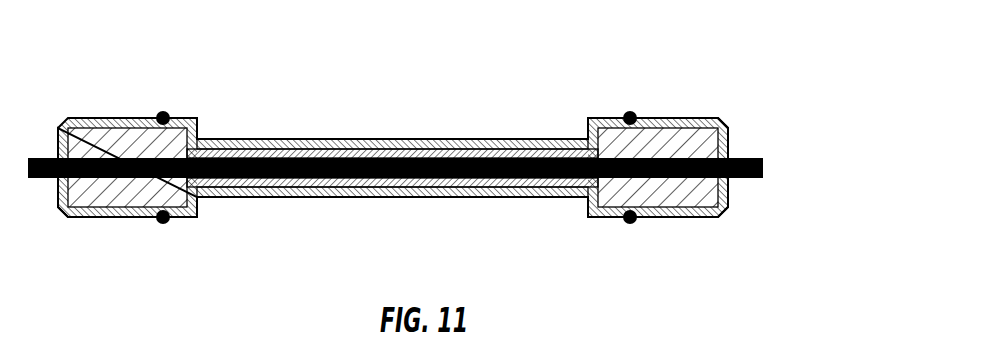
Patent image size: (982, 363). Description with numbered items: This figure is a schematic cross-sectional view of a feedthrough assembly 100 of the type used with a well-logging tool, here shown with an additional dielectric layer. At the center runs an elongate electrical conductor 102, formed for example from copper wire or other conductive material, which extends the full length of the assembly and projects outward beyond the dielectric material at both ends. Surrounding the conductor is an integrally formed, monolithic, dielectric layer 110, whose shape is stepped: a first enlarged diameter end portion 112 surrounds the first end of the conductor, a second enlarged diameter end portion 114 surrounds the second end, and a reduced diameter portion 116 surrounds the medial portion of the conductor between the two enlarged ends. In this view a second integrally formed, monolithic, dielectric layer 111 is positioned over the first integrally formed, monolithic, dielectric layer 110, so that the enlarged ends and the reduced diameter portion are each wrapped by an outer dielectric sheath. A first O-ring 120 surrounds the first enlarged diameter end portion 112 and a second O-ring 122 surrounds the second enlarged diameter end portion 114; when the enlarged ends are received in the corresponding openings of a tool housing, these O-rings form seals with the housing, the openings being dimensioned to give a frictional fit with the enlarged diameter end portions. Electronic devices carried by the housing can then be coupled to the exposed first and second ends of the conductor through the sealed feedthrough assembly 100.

The feedthrough assembly 100 is at (401, 101).
The elongate electrical conductor 102 is at (763, 166).
The integrally formed, monolithic, dielectric layer 110 is at (271, 114).
The second integrally formed, monolithic, dielectric layer 111 is at (72, 214).
The first enlarged diameter end portion 112 is at (83, 128).
The second enlarged diameter end portion 114 is at (707, 137).
The reduced diameter portion 116 is at (228, 198).
The first O-ring 120 is at (165, 111).
The second O-ring 122 is at (632, 110).